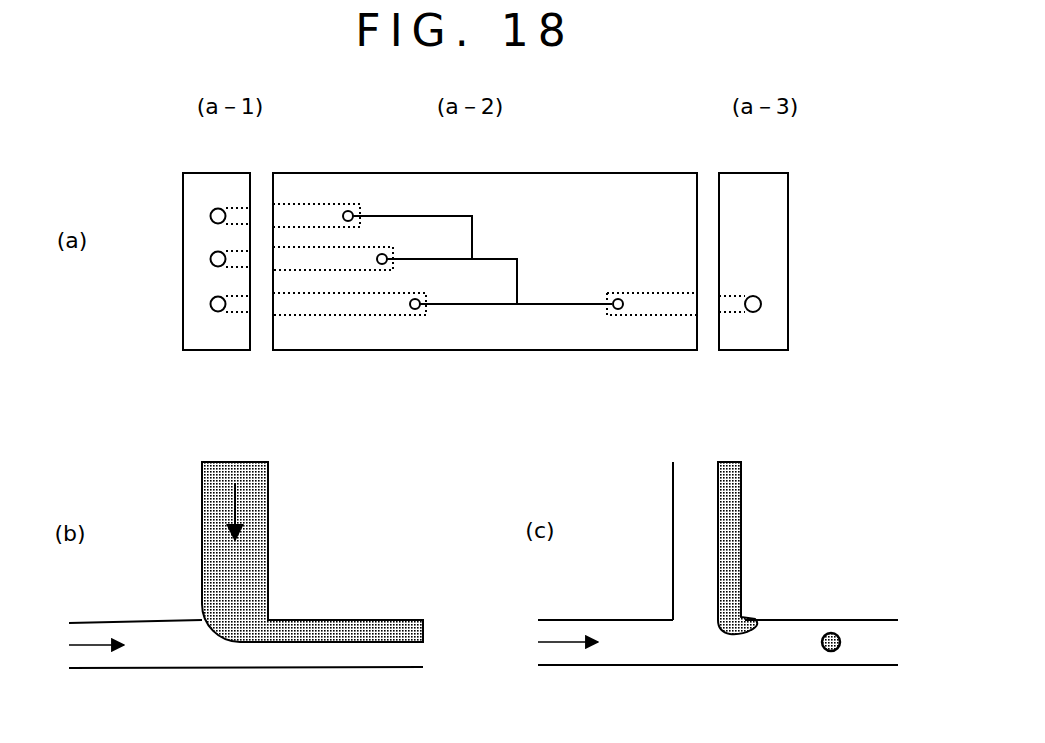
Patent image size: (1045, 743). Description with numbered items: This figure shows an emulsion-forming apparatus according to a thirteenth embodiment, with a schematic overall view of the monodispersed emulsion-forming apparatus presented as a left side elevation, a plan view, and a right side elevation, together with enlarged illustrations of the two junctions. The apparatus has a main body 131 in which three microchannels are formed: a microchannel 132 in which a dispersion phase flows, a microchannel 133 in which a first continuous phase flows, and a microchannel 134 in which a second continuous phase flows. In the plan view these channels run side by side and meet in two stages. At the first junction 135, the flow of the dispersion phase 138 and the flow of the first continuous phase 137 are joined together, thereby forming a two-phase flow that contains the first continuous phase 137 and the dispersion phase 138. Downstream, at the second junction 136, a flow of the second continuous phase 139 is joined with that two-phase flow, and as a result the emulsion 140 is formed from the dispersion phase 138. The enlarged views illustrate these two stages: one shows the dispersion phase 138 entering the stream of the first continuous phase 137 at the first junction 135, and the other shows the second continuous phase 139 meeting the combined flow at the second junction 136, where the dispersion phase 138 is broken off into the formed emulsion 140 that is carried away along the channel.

The main body 131 is at (208, 173).
The microchannel for dispersion phase 132 is at (414, 216).
The microchannel for first continuous phase 133 is at (415, 258).
The microchannel for second continuous phase 134 is at (458, 302).
The first junction 135 is at (478, 257).
The second junction 136 is at (520, 303).
The first continuous phase 137 is at (118, 624).
The dispersion phase 138 is at (268, 505).
The second continuous phase 139 is at (590, 624).
The formed emulsion 140 is at (827, 652).